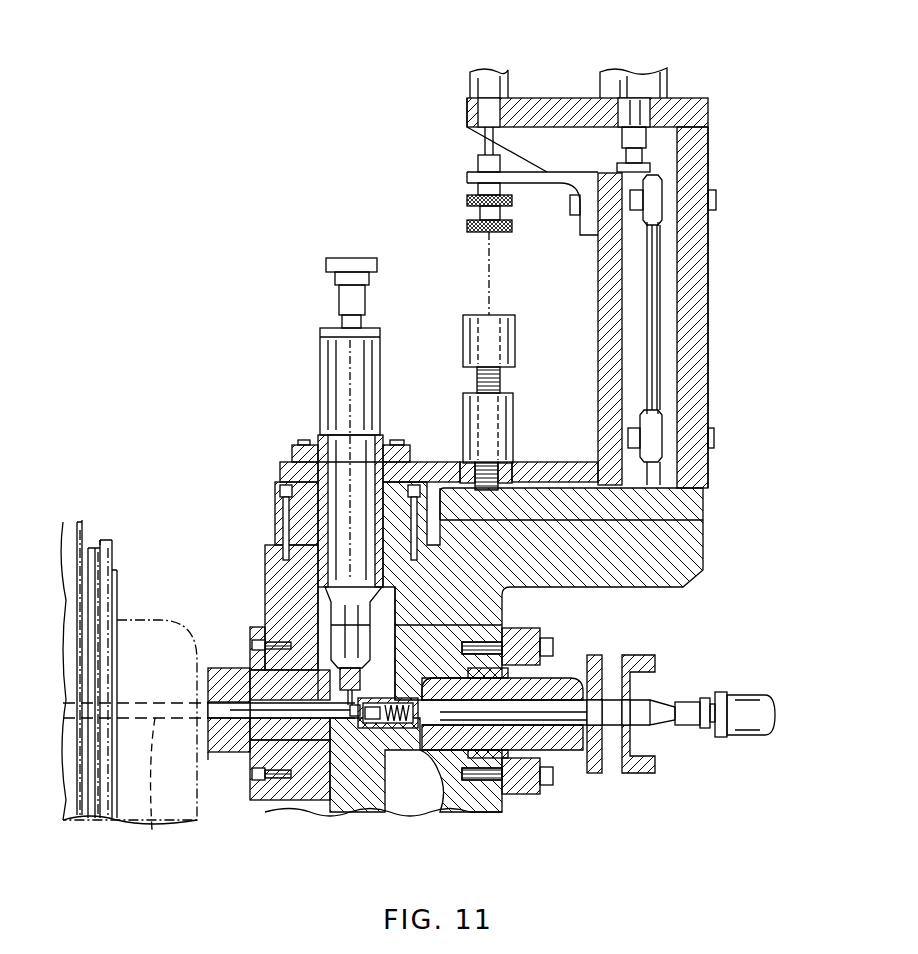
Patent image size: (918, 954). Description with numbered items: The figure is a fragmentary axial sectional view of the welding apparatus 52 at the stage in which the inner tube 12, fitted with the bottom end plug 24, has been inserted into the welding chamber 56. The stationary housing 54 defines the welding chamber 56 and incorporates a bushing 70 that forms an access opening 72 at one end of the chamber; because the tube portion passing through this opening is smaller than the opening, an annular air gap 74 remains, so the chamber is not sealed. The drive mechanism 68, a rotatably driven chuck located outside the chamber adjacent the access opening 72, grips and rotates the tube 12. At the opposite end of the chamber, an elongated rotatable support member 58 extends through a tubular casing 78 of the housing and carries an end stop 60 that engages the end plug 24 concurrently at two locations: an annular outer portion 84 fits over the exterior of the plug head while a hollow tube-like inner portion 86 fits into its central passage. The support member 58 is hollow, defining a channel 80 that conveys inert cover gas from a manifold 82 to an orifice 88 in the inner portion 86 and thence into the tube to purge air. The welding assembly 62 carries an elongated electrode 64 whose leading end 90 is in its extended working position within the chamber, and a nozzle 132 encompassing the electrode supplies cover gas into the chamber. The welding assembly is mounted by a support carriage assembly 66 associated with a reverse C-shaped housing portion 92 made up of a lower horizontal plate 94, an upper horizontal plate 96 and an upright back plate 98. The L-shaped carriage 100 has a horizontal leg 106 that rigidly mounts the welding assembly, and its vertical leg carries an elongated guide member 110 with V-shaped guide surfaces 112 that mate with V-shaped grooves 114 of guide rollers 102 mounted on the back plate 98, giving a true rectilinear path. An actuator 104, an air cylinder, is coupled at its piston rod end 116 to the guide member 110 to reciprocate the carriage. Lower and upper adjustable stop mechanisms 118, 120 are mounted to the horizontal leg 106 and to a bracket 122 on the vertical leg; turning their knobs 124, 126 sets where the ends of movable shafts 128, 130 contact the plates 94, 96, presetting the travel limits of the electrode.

The inner tube 12 is at (176, 815).
The bottom end plug 24 is at (375, 735).
The welding apparatus 52 is at (447, 82).
The stationary housing 54 is at (710, 565).
The welding chamber 56 is at (352, 735).
The elongated rotatable support member 58 is at (575, 760).
The end stop 60 is at (397, 735).
The welding assembly 62 is at (288, 405).
The electrode 64 is at (272, 508).
The support carriage assembly 66 is at (708, 403).
The drive mechanism 68 is at (120, 545).
The bushing 70 is at (212, 776).
The access opening 72 is at (262, 790).
The annular air gap 74 is at (222, 665).
The tubular casing 78 is at (622, 775).
The channel 80 is at (603, 740).
The manifold 82 is at (748, 738).
The outer portion of end stop 84 is at (405, 727).
The inner portion of end stop 86 is at (390, 727).
The orifice 88 is at (412, 735).
The leading end of electrode 90 is at (318, 760).
The reverse C-shaped housing portion 92 is at (712, 337).
The lower horizontal plate 94 is at (592, 522).
The upper horizontal plate 96 is at (533, 98).
The upright back plate 98 is at (708, 373).
The carriage 100 is at (545, 492).
The guide rollers 102 is at (662, 190).
The actuator 104 is at (665, 86).
The horizontal leg of carriage 106 is at (555, 462).
The guide member 110 is at (653, 302).
The guide surfaces 112 is at (657, 272).
The V-shaped grooves 114 is at (662, 205).
The piston rod end 116 is at (640, 158).
The lower adjustable stop mechanism 118 is at (462, 405).
The upper adjustable stop mechanism 120 is at (460, 203).
The bracket 122 is at (578, 175).
The knob of lower stop mechanism 124 is at (480, 315).
The knob of upper stop mechanism 126 is at (470, 233).
The movable shaft of lower stop mechanism 128 is at (488, 492).
The movable shaft of upper stop mechanism 130 is at (482, 148).
The nozzle 132 is at (262, 640).